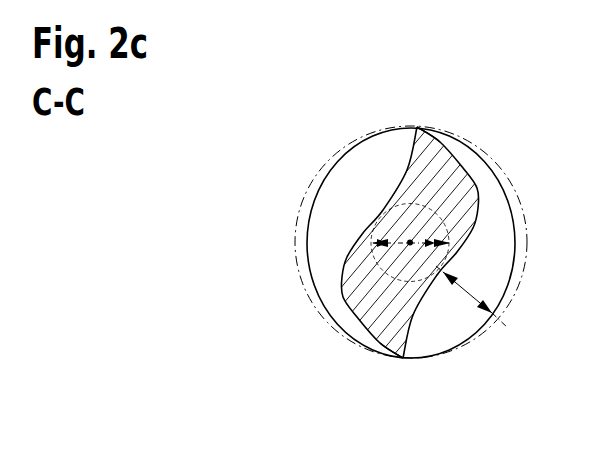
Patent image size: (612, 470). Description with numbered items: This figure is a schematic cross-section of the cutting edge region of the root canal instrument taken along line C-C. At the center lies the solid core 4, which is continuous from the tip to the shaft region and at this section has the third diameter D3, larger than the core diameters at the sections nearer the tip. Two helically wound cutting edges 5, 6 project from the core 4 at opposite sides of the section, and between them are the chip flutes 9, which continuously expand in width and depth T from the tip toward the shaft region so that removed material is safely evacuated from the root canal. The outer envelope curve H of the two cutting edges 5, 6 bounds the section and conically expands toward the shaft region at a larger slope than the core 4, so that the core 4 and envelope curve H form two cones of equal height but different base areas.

The chip flutes 9 is at (377, 165).
The core 4 is at (445, 266).
The cutting edge 5 is at (417, 127).
The cutting edge 6 is at (403, 358).
The third diameter D3 is at (398, 240).
The envelope curve H is at (510, 198).
The depth T is at (470, 293).